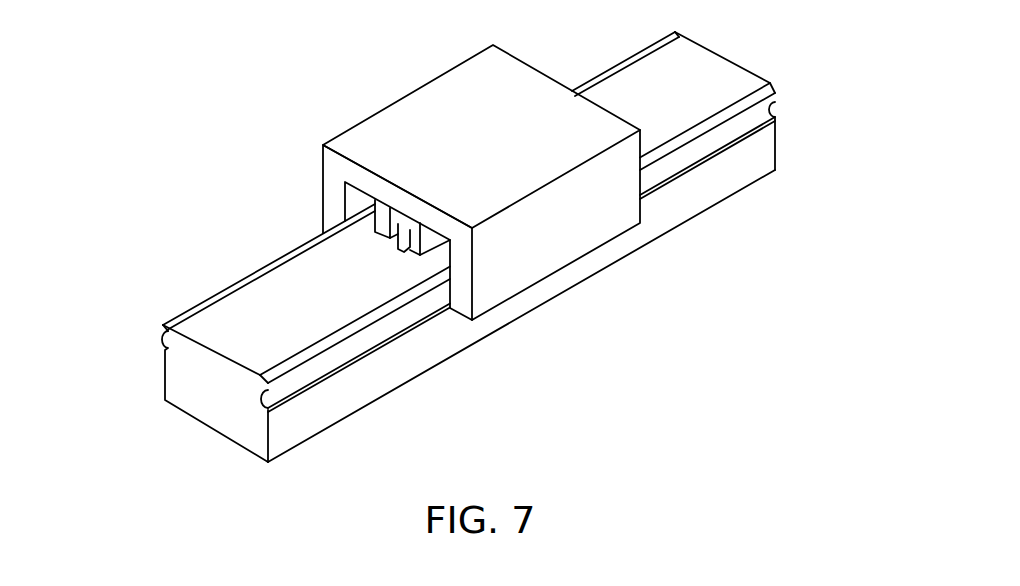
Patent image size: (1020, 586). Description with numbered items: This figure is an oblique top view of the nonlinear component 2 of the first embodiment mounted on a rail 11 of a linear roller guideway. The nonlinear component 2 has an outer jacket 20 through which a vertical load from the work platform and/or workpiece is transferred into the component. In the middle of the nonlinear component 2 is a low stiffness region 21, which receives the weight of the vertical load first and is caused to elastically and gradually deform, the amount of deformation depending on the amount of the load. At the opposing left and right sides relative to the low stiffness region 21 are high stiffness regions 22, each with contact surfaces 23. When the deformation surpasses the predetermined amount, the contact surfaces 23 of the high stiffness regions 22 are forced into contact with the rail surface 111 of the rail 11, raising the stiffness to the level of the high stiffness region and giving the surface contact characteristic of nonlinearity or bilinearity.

The nonlinear component 2 is at (434, 193).
The jacket 20 is at (397, 117).
The low stiffness region 21 is at (395, 228).
The high stiffness regions 22 is at (380, 220).
The contact surfaces 23 is at (376, 234).
The rail 11 is at (377, 365).
The rail surface 111 is at (252, 298).